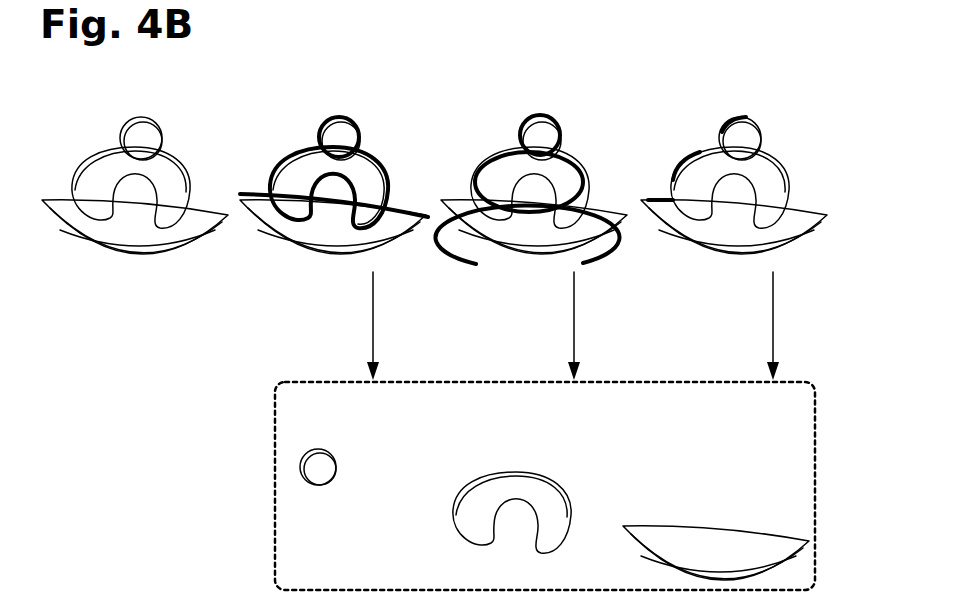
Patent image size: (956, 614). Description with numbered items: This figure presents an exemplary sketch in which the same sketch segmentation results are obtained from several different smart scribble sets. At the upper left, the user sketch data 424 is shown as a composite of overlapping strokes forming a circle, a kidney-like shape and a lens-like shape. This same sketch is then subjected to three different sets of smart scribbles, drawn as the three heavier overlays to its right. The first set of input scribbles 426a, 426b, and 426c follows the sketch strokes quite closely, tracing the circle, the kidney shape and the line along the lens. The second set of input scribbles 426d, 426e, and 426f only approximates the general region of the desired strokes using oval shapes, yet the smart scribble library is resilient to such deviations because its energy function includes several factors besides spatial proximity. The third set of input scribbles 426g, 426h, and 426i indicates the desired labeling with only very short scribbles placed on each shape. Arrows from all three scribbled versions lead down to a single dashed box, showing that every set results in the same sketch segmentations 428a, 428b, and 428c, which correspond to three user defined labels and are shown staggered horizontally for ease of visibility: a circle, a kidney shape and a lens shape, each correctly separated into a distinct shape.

The user sketch data 424 is at (182, 130).
The input scribble 426a is at (342, 118).
The input scribble 426b is at (368, 150).
The input scribble 426c is at (260, 194).
The input scribble 426d is at (542, 117).
The input scribble 426e is at (578, 160).
The input scribble 426f is at (470, 258).
The input scribble 426g is at (737, 121).
The input scribble 426h is at (690, 155).
The input scribble 426i is at (662, 210).
The sketch segmentation 428a is at (320, 448).
The sketch segmentation 428b is at (498, 471).
The sketch segmentation 428c is at (703, 527).